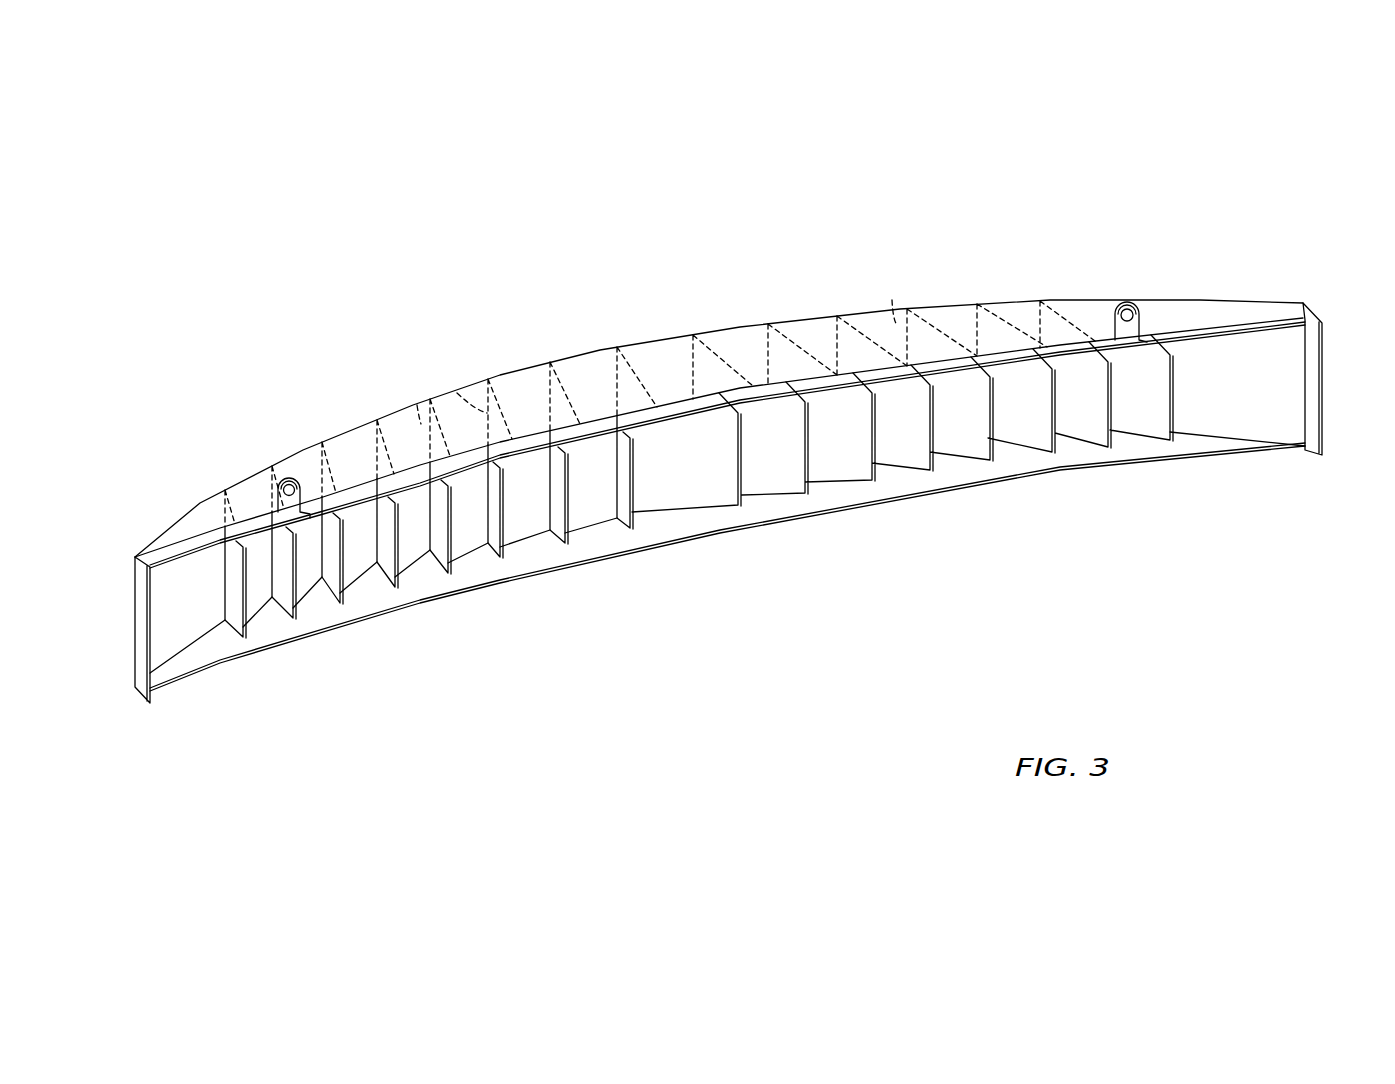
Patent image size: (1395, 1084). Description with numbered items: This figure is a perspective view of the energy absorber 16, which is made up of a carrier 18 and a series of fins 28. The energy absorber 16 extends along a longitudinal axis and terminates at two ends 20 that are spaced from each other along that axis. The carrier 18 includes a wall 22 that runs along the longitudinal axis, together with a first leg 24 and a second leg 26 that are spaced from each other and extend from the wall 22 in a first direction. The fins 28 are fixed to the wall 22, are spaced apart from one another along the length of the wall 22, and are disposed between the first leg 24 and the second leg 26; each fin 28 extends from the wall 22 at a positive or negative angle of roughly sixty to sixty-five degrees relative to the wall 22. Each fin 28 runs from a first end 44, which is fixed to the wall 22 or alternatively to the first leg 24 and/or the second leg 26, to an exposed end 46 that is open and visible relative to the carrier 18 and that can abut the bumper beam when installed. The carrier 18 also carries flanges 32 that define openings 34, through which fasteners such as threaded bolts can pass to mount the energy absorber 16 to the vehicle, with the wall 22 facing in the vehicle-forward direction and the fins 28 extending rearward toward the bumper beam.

The energy absorber 16 is at (1188, 188).
The carrier 18 is at (115, 673).
The ends 20 is at (140, 608).
The wall 22 is at (588, 492).
The first leg 24 is at (583, 382).
The second leg 26 is at (362, 590).
The fins 28 is at (840, 455).
The flanges 32 is at (275, 490).
The openings 34 is at (303, 508).
The first end 44 is at (543, 387).
The exposed end 46 is at (397, 540).